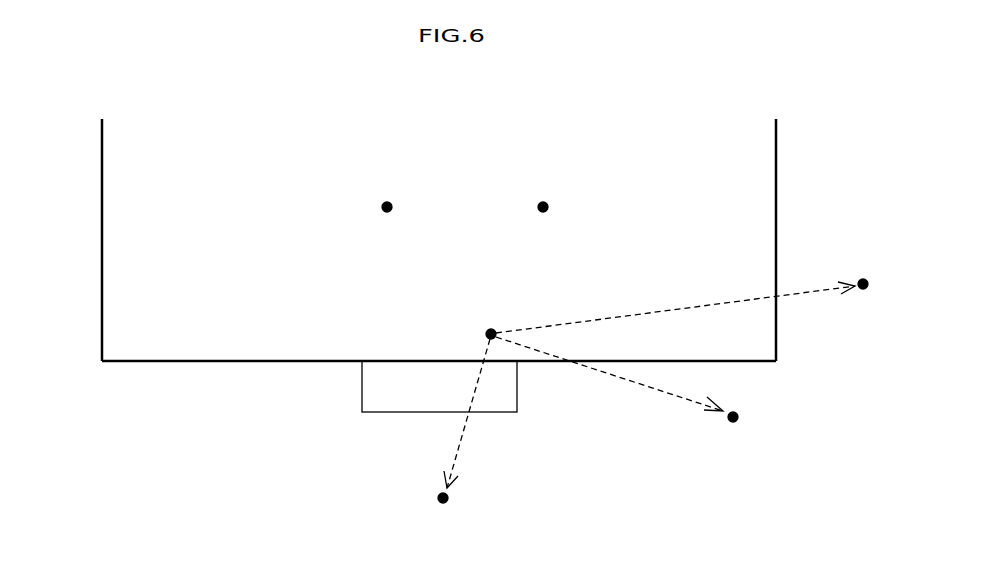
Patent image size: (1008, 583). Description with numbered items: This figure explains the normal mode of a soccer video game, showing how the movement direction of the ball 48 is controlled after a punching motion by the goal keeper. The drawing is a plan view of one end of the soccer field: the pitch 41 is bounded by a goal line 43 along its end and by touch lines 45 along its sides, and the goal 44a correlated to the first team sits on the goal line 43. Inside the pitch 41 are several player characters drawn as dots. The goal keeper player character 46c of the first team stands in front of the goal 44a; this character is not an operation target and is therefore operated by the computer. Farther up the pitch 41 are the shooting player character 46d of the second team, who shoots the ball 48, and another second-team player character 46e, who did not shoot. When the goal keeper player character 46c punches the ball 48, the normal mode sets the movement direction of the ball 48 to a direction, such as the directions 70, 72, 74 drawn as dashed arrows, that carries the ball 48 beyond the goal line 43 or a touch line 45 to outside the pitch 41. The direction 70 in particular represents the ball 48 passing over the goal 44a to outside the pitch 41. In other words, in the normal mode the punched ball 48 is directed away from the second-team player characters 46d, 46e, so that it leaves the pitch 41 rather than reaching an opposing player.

The pitch 41 is at (262, 352).
The goal line 43 is at (170, 362).
The goal 44a is at (382, 413).
The touch line 45 is at (102, 205).
The goal keeper player character 46c is at (491, 329).
The shooting player character 46d is at (543, 201).
The player character 46e is at (387, 201).
The ball 48 is at (860, 278).
The direction 70 is at (462, 438).
The direction 72 is at (618, 377).
The direction 74 is at (810, 290).